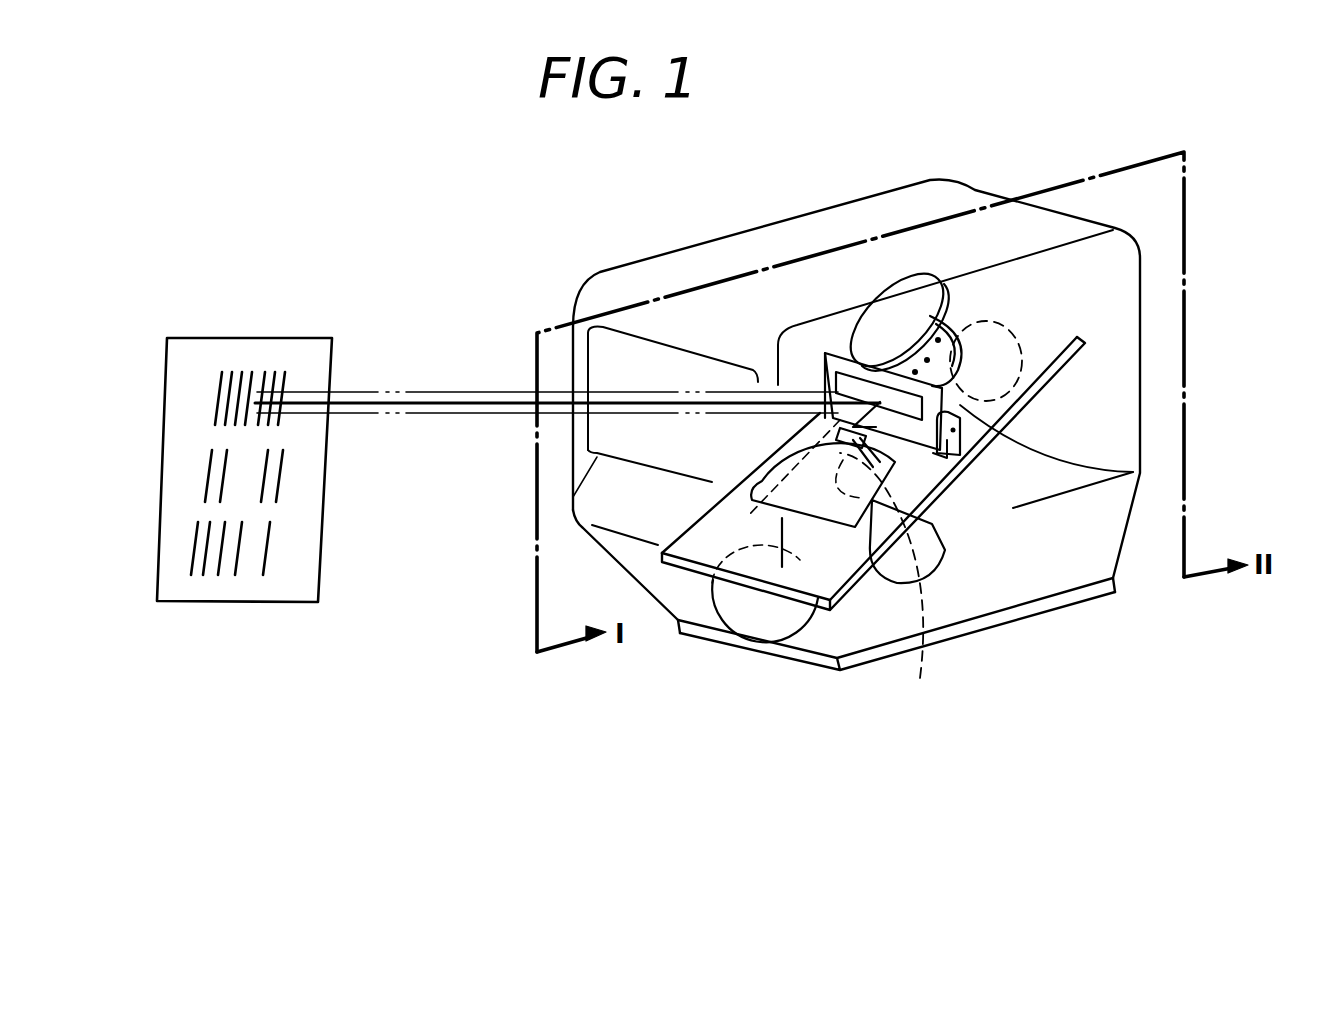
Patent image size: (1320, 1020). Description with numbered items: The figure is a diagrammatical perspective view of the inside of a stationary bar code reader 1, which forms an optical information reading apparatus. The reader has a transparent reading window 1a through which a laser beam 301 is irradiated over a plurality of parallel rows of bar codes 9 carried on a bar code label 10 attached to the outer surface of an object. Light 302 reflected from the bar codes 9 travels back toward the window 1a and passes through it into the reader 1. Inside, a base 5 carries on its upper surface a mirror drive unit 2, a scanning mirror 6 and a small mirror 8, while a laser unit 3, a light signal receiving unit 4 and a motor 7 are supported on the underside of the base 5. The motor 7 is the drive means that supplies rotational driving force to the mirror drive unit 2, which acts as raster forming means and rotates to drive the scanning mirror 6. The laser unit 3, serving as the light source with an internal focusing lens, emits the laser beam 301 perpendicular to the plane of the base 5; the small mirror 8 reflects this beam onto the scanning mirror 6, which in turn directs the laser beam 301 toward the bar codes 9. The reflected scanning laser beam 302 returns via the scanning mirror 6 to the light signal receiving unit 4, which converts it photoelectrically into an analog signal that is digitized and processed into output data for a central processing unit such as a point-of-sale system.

The bar code reader 1 is at (600, 272).
The transparent reading window 1a is at (573, 497).
The mirror drive unit 2 is at (945, 318).
The laser unit 3 is at (844, 529).
The light signal receiving unit 4 is at (790, 613).
The base 5 is at (1082, 342).
The scanning mirror 6 is at (1133, 472).
The motor 7 is at (1040, 395).
The small mirror 8 is at (942, 447).
The bar codes 9 is at (250, 368).
The bar code label 10 is at (240, 603).
The laser beam 301 is at (452, 406).
The reflected light 302 is at (473, 389).